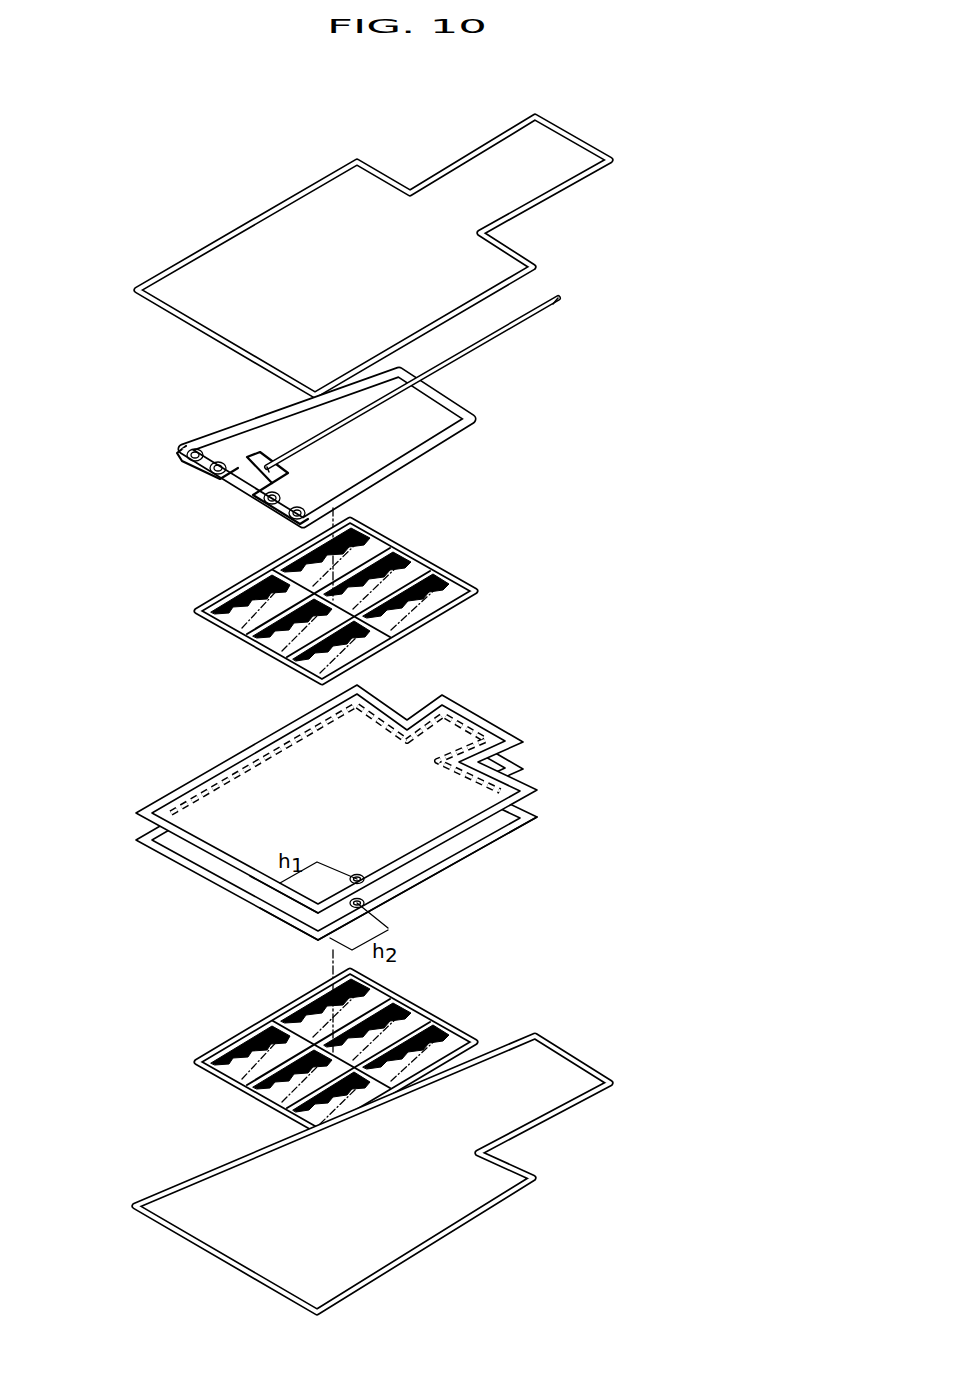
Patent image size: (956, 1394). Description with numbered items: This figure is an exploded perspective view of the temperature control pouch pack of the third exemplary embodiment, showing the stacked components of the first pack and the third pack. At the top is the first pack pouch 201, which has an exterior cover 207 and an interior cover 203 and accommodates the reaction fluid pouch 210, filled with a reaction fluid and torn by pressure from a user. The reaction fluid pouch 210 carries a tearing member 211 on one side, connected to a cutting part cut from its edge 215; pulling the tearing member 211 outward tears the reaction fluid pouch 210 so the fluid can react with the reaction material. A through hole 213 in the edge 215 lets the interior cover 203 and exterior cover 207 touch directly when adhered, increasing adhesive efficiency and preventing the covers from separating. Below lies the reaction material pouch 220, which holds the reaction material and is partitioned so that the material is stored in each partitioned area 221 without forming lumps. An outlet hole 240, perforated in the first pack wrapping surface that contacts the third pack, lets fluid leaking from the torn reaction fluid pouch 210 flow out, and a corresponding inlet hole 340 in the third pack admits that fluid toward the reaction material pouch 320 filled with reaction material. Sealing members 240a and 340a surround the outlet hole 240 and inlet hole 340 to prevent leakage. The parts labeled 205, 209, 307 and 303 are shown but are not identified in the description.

The first pack pouch 201 is at (265, 217).
The side edge of upper cover plate 205 is at (582, 178).
The exterior cover 207 is at (167, 303).
The reaction fluid pouch 210 is at (415, 440).
The tearing member 211 is at (522, 323).
The through hole 213 is at (186, 462).
The edge 215 is at (193, 437).
The reaction material pouch 220 is at (294, 601).
The partitioned area 221 is at (213, 617).
The interior cover 203 is at (170, 806).
The lower intermediate plate 209 is at (160, 832).
The lower intermediate plate edge 307 is at (483, 833).
The outlet hole 240 is at (283, 889).
The sealing member 240a is at (372, 888).
The inlet hole 340 is at (330, 933).
The sealing member 340a is at (370, 906).
The reaction material pouch 320 is at (200, 1068).
The bottom plate 303 is at (436, 1232).